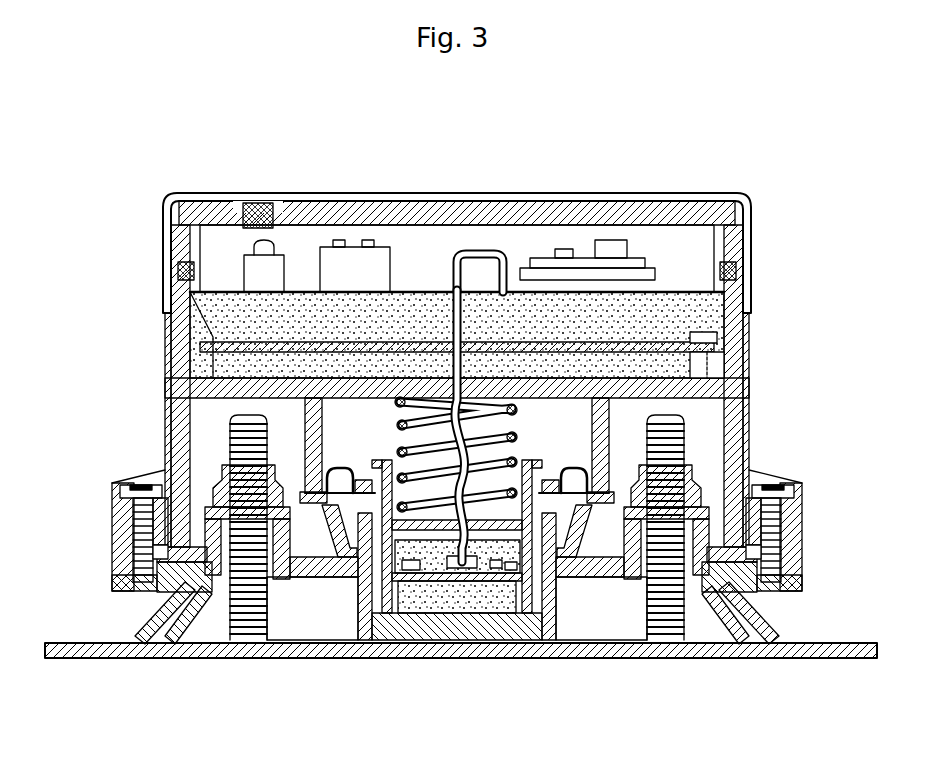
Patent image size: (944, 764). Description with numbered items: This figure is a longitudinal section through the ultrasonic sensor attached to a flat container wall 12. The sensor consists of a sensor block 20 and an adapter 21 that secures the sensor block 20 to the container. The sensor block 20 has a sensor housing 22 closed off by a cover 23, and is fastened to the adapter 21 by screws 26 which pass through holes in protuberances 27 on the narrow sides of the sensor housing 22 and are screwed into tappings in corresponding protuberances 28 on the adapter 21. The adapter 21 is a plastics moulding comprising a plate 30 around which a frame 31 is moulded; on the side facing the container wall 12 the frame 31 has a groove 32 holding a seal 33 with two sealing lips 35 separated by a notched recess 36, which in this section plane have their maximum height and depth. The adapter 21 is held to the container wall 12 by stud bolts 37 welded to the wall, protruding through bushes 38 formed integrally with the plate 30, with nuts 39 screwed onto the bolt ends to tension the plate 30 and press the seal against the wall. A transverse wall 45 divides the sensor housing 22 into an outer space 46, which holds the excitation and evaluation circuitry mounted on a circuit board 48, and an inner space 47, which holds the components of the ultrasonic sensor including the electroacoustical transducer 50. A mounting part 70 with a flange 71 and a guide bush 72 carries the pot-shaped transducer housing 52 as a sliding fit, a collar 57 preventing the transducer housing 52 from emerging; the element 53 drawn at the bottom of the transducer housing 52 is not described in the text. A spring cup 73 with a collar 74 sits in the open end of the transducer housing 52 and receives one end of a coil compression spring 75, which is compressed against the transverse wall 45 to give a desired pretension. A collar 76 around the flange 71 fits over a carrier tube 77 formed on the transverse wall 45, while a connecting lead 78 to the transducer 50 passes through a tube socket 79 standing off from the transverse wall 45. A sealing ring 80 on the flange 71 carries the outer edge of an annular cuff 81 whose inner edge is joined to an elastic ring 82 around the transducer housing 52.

The sensor block 20 is at (148, 194).
The container wall 12 is at (72, 655).
The adapter 21 is at (105, 572).
The sensor housing 22 is at (176, 284).
The cover 23 is at (588, 212).
The screws 26 is at (122, 492).
The protuberances 27 is at (118, 512).
The protuberances 28 is at (115, 545).
The plate 30 is at (320, 570).
The frame 31 is at (160, 585).
The groove 32 is at (200, 587).
The seal 33 is at (145, 620).
The sealing lips 35 is at (138, 640).
The notched recess 36 is at (178, 620).
The stud bolts 37 is at (225, 440).
The bushes 38 is at (195, 475).
The nuts 39 is at (210, 455).
The transverse wall 45 is at (297, 395).
The outer space 46 is at (192, 328).
The inner space 47 is at (200, 366).
The circuit board 48 is at (665, 340).
The electroacoustical transducer 50 is at (358, 623).
The transducer housing 52 is at (540, 612).
The cup bottom 53 is at (428, 622).
The collar 57 is at (362, 480).
The mounting part 70 is at (597, 562).
The flange 71 is at (613, 530).
The guide bush 72 is at (563, 592).
The spring cup 73 is at (497, 602).
The collar 74 is at (545, 472).
The coil compression spring 75 is at (396, 380).
The collar 76 is at (300, 462).
The carrier tube 77 is at (700, 395).
The connecting lead 78 is at (493, 290).
The tube socket 79 is at (442, 398).
The sealing ring 80 is at (602, 468).
The annular cuff 81 is at (548, 470).
The elastic ring 82 is at (535, 467).